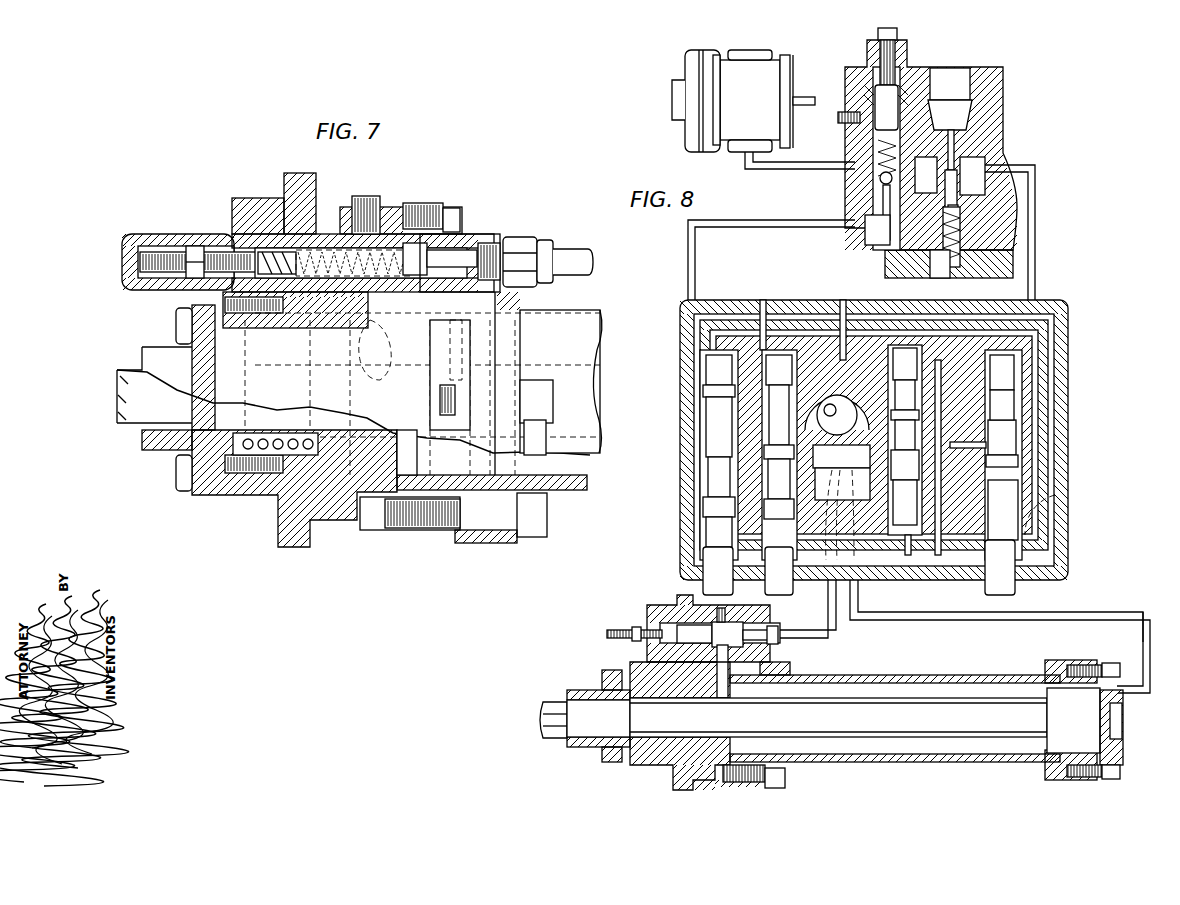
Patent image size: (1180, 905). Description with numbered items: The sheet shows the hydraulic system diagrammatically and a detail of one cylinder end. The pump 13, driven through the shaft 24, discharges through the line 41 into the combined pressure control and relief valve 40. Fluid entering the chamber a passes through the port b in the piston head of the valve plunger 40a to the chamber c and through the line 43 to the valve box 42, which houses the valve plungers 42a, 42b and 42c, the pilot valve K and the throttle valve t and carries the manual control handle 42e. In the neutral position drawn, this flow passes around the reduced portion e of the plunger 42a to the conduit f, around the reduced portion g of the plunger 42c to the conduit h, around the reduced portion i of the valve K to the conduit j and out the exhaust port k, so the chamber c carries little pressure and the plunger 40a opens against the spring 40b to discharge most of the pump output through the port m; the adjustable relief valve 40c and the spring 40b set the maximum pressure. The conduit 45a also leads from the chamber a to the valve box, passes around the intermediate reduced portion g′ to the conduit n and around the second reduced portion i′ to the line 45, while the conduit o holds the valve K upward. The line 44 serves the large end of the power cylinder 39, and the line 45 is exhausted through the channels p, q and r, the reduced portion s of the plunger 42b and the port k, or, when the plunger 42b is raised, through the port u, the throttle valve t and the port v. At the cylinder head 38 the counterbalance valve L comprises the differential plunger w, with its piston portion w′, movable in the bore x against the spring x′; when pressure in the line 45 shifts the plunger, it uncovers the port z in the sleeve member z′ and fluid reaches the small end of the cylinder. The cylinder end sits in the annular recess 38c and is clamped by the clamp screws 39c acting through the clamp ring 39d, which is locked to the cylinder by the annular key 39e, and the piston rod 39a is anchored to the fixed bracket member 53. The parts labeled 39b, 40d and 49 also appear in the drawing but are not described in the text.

In FIG. 8, the pump 13 is at (732, 101).
In FIG. 8, the shaft 24 is at (802, 97).
In FIG. 7, the cylinder head 38 is at (300, 178).
In FIG. 8, the cylinder head 38 is at (680, 792).
In FIG. 7, the annular recess 38c is at (402, 450).
In FIG. 7, the power cylinder 39 is at (582, 490).
In FIG. 8, the power cylinder 39 is at (901, 676).
In FIG. 7, the piston rod 39a is at (598, 358).
In FIG. 8, the piston rod 39a is at (838, 717).
In FIG. 8, the piston 39b is at (1084, 720).
In FIG. 7, the clamp screws 39c is at (538, 380).
In FIG. 8, the clamp screws 39c is at (795, 789).
In FIG. 7, the clamp ring 39d is at (484, 546).
In FIG. 8, the clamp ring 39d is at (790, 660).
In FIG. 7, the annular key 39e is at (455, 515).
In FIG. 8, the annular key 39e is at (765, 762).
In FIG. 8, the pressure control and by-pass valve 40 is at (847, 187).
In FIG. 8, the valve plunger 40a is at (980, 218).
In FIG. 8, the spring 40b is at (960, 262).
In FIG. 8, the adjustable pressure relief valve 40c is at (838, 114).
In FIG. 8, the valve spring 40d is at (875, 147).
In FIG. 8, the line 41 is at (768, 168).
In FIG. 8, the control device 42 is at (682, 460).
In FIG. 8, the valve plunger 42a is at (702, 560).
In FIG. 8, the valve plunger 42b is at (778, 588).
In FIG. 8, the valve plunger 42c is at (1014, 592).
In FIG. 8, the manual control handle 42e is at (1060, 514).
In FIG. 8, the line 43 is at (757, 227).
In FIG. 8, the line 44 is at (946, 618).
In FIG. 7, the line 45 is at (573, 252).
In FIG. 8, the line 45 is at (856, 598).
In FIG. 8, the line 45a is at (1037, 292).
In FIG. 8, the pump flange 49 is at (740, 50).
In FIG. 7, the fixed bracket member 53 is at (160, 449).
In FIG. 8, the fixed bracket member 53 is at (580, 690).
In FIG. 7, the counterbalance valve L is at (362, 205).
In FIG. 8, the counterbalance valve L is at (648, 598).
In FIG. 8, the chamber a is at (950, 170).
In FIG. 8, the port b is at (863, 212).
In FIG. 8, the chamber c is at (932, 276).
In FIG. 8, the reduced portion e is at (700, 387).
In FIG. 8, the conduit f is at (763, 302).
In FIG. 8, the reduced portion g is at (1040, 482).
In FIG. 8, the intermediate reduced portion g′ is at (1010, 435).
In FIG. 8, the conduit h is at (940, 543).
In FIG. 8, the reduced portion i is at (905, 395).
In FIG. 8, the second reduced portion i′ is at (905, 430).
In FIG. 8, the conduit j is at (848, 300).
In FIG. 8, the pilot valve K is at (905, 440).
In FIG. 8, the exhaust port k is at (720, 427).
In FIG. 8, the port m is at (950, 99).
In FIG. 8, the conduit n is at (1022, 450).
In FIG. 8, the conduit o is at (922, 576).
In FIG. 8, the channel p is at (905, 487).
In FIG. 8, the channel q is at (842, 514).
In FIG. 8, the channel r is at (779, 455).
In FIG. 8, the reduced portion s is at (720, 445).
In FIG. 8, the throttle valve t is at (837, 415).
In FIG. 8, the port u is at (841, 456).
In FIG. 8, the port v is at (829, 407).
In FIG. 7, the differential plunger element w is at (273, 253).
In FIG. 8, the differential plunger element w is at (727, 627).
In FIG. 7, the piston portion w′ is at (324, 251).
In FIG. 7, the bore x is at (260, 214).
In FIG. 7, the spring x′ is at (208, 299).
In FIG. 7, the port z is at (402, 310).
In FIG. 7, the sleeve member z′ is at (430, 340).